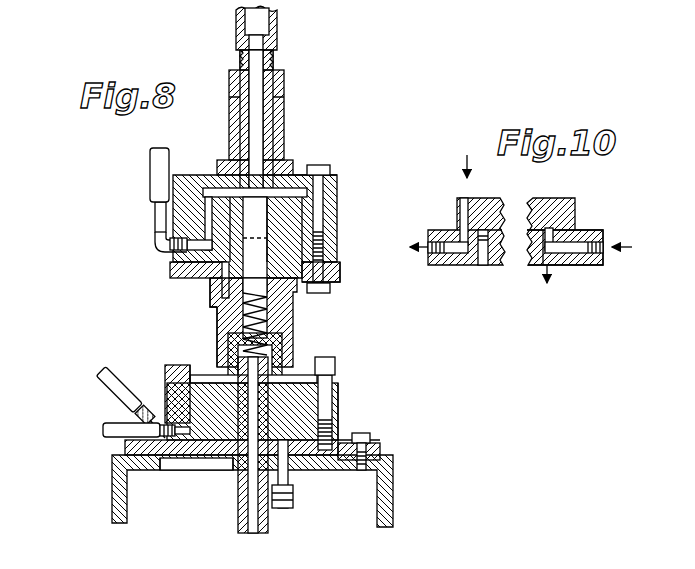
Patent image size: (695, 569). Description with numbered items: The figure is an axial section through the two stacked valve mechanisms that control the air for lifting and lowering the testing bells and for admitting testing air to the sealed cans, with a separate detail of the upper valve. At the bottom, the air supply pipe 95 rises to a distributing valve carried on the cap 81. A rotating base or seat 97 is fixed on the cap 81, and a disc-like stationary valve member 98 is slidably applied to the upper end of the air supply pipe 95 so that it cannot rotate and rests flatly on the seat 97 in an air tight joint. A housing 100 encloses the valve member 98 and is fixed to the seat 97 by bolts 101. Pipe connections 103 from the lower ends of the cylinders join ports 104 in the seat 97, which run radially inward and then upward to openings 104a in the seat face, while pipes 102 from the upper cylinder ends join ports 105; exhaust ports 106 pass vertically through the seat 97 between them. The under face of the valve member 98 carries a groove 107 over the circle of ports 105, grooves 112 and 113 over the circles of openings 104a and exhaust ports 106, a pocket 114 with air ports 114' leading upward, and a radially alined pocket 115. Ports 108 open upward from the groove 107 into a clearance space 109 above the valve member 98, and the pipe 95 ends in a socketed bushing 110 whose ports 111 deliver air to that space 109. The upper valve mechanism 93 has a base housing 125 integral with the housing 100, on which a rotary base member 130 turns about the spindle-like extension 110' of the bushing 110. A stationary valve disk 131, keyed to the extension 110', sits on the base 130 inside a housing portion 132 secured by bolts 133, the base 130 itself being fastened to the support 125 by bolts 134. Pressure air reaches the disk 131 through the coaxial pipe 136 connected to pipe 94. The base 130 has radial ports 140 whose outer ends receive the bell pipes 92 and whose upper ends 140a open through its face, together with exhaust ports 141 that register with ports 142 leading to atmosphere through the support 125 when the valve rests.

In FIG. 8, the pipe 94 is at (280, 22).
In FIG. 8, the pipe 136 is at (275, 62).
In FIG. 8, the housing portion 132 is at (295, 168).
In FIG. 8, the stationary valve disk 131 is at (310, 175).
In FIG. 10, the stationary valve disk 131 is at (576, 215).
In FIG. 8, the bolts 133 is at (335, 181).
In FIG. 8, the valve mechanism 93 is at (340, 212).
In FIG. 8, the rotary base member 130 is at (337, 238).
In FIG. 10, the rotary base member 130 is at (565, 268).
In FIG. 8, the bolts 134 is at (341, 276).
In FIG. 8, the exhaust ports 141 is at (170, 270).
In FIG. 10, the exhaust ports 141 is at (481, 266).
In FIG. 8, the ports 140 is at (172, 245).
In FIG. 10, the ports 140 is at (458, 252).
In FIG. 8, the upper ends of ports 140a is at (160, 228).
In FIG. 8, the pipes 92 is at (152, 170).
In FIG. 8, the base housing 125 is at (298, 292).
In FIG. 8, the ports 142 is at (207, 282).
In FIG. 8, the spindle-like extension 110' is at (291, 348).
In FIG. 8, the socketed bushing 110 is at (305, 327).
In FIG. 8, the clearance space 109 is at (205, 376).
In FIG. 8, the ports 108 is at (340, 386).
In FIG. 8, the pocket 114 is at (157, 391).
In FIG. 8, the air ports 114' is at (149, 361).
In FIG. 8, the pocket 115 is at (212, 350).
In FIG. 8, the ports 111 is at (216, 337).
In FIG. 8, the ports 104 is at (163, 470).
In FIG. 8, the cap 81 is at (395, 497).
In FIG. 8, the exhaust ports 106 is at (188, 462).
In FIG. 8, the ports 105 is at (226, 462).
In FIG. 8, the air supply pipe 95 is at (240, 520).
In FIG. 8, the rotating base or seat 97 is at (362, 446).
In FIG. 8, the bolts 101 is at (342, 407).
In FIG. 8, the housing 100 is at (343, 383).
In FIG. 8, the groove 112 is at (340, 409).
In FIG. 8, the stationary valve member 98 is at (337, 372).
In FIG. 8, the groove 113 is at (322, 458).
In FIG. 8, the groove or channel 107 is at (297, 440).
In FIG. 8, the pipe connections 102 is at (102, 380).
In FIG. 8, the openings 104a is at (138, 412).
In FIG. 8, the pipe connections 103 is at (105, 440).